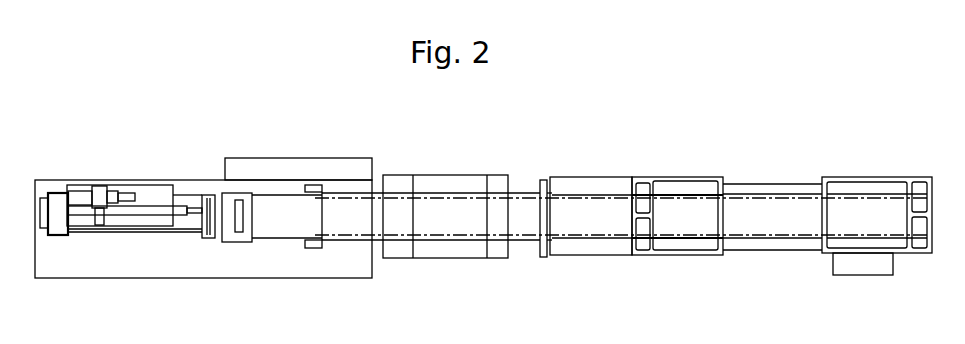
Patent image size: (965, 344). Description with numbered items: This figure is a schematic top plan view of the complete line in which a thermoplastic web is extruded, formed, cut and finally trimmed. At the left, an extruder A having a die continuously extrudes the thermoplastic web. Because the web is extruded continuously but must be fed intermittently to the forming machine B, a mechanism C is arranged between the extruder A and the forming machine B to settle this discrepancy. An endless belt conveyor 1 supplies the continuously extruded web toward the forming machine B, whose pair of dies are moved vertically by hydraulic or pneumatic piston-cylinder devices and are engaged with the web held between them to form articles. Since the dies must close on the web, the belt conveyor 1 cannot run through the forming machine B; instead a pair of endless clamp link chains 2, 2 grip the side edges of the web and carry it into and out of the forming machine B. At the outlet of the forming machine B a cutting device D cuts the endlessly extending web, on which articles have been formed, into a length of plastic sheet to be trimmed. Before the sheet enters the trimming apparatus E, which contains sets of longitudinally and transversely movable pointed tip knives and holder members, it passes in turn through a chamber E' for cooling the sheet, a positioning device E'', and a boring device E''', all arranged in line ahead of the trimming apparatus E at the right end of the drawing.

The extruder A is at (112, 177).
The forming machine B is at (455, 168).
The mechanism C is at (268, 190).
The cutting device D is at (542, 170).
The cooling chamber E' is at (597, 179).
The positioning device E'' is at (677, 179).
The boring device E''' is at (772, 176).
The trimming apparatus E is at (877, 185).
The endless belt conveyor 1 is at (353, 225).
The endless clamp link chains 2 is at (425, 200).